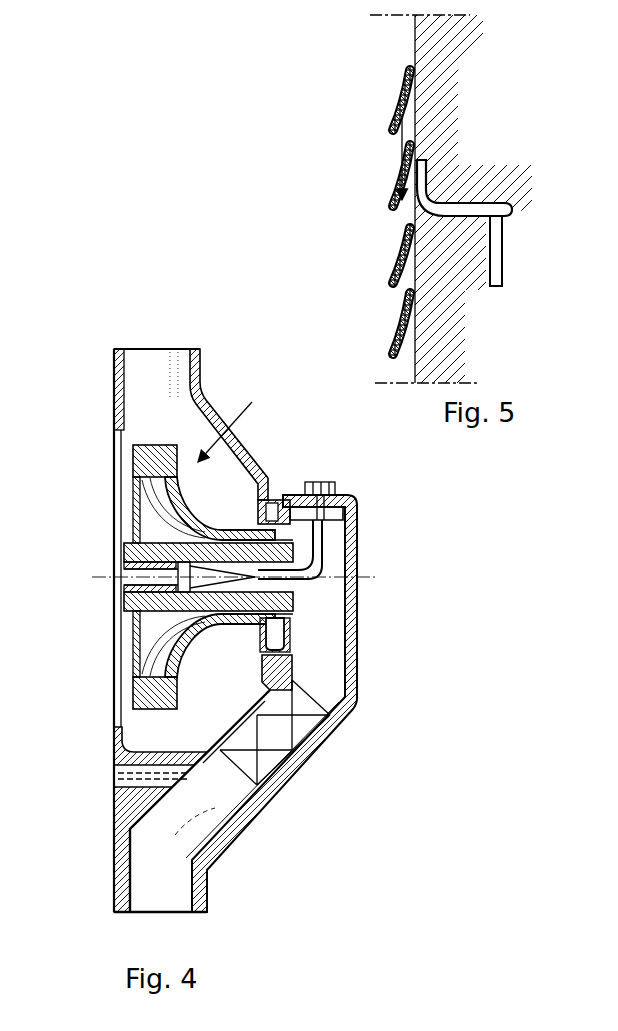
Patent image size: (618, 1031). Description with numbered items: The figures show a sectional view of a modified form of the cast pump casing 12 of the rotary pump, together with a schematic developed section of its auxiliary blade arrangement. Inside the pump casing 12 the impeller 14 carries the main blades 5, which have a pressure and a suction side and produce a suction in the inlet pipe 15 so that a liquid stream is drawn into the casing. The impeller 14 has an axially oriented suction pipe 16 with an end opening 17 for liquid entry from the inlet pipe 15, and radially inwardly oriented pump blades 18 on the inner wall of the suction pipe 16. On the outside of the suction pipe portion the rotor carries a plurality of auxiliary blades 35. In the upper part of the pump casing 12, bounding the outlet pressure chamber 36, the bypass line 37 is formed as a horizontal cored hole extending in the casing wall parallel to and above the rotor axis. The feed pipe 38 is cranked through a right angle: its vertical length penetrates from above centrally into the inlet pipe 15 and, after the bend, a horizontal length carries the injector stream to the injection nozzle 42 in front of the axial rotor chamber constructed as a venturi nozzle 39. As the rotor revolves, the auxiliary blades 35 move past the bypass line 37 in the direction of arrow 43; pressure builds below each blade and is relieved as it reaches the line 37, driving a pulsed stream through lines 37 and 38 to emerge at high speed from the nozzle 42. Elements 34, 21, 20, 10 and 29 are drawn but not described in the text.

In FIG. 4, the blades 5 is at (138, 446).
In FIG. 4, the pump casing 12 is at (192, 348).
In FIG. 5, the pump casing 12 is at (451, 193).
In FIG. 4, the outlet pressure chamber 36 is at (204, 398).
In FIG. 4, the impeller 14 is at (233, 422).
In FIG. 4, the venturi nozzle 39 is at (200, 562).
In FIG. 4, the auxiliary blades 35 is at (281, 500).
In FIG. 5, the auxiliary blades 35 is at (418, 80).
In FIG. 4, the bolt 34 is at (322, 495).
In FIG. 4, the end opening 17 is at (352, 567).
In FIG. 4, the feed pipe 38 is at (350, 533).
In FIG. 5, the feed pipe 38 is at (503, 268).
In FIG. 4, the bypass line 37 is at (348, 505).
In FIG. 5, the bypass line 37 is at (503, 215).
In FIG. 4, the pump blades 18 is at (297, 589).
In FIG. 4, the bearing 21 is at (125, 567).
In FIG. 4, the hub 20 is at (122, 578).
In FIG. 4, the injection nozzle 42 is at (296, 612).
In FIG. 4, the suction pipe 16 is at (323, 668).
In FIG. 4, the inlet pipe 15 is at (358, 683).
In FIG. 4, the motor 10 is at (290, 758).
In FIG. 4, the outlet pipe 29 is at (245, 818).
In FIG. 5, the arrow 43 is at (420, 166).